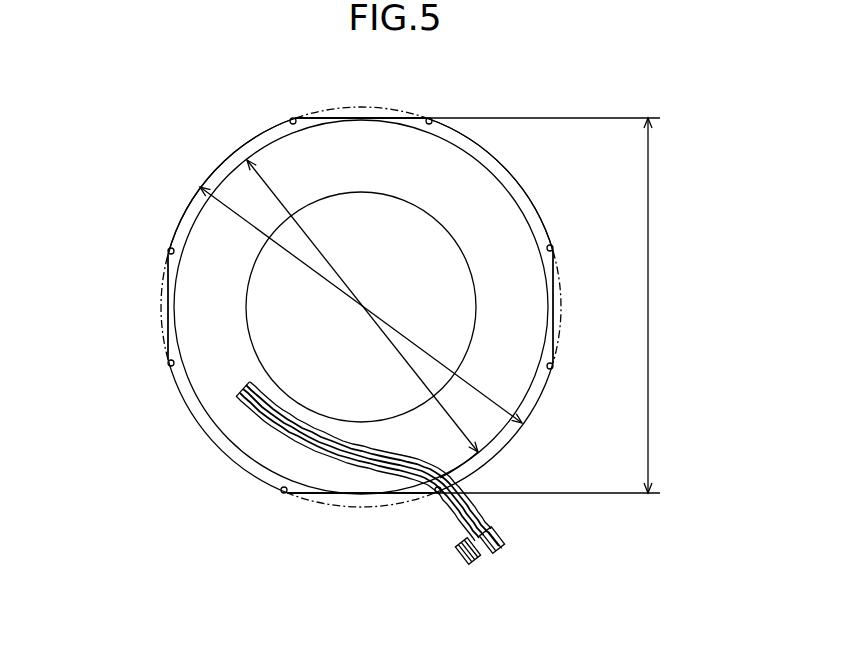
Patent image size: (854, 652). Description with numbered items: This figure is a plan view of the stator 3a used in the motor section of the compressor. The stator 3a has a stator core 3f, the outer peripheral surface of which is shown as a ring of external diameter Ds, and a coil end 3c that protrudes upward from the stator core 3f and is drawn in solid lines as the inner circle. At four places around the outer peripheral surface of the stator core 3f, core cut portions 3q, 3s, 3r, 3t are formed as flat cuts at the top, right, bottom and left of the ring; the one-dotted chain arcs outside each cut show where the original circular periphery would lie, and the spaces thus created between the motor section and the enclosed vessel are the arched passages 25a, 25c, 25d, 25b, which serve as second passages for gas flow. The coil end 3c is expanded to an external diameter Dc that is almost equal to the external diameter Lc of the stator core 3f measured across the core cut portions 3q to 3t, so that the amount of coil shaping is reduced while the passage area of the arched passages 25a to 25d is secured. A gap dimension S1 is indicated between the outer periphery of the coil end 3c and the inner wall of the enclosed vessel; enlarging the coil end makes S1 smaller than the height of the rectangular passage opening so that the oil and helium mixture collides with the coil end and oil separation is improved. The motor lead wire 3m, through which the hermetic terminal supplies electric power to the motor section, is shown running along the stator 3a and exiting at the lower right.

The stator 3a is at (250, 143).
The coil end 3c is at (453, 168).
The stator core 3f is at (510, 173).
The core cut portion 3q is at (403, 118).
The core cut portion 3s is at (552, 288).
The core cut portion 3r is at (318, 497).
The core cut portion 3t is at (163, 262).
The arched passage 25a is at (381, 110).
The arched passage 25b is at (159, 330).
The arched passage 25c is at (562, 322).
The arched passage 25d is at (352, 500).
The motor lead wire 3m is at (437, 500).
The external diameter of coil end Dc is at (330, 250).
The stator external diameter Ds is at (515, 412).
The external diameter of stator core in core cut portions Lc is at (484, 305).
The gap dimension S1 is at (485, 460).